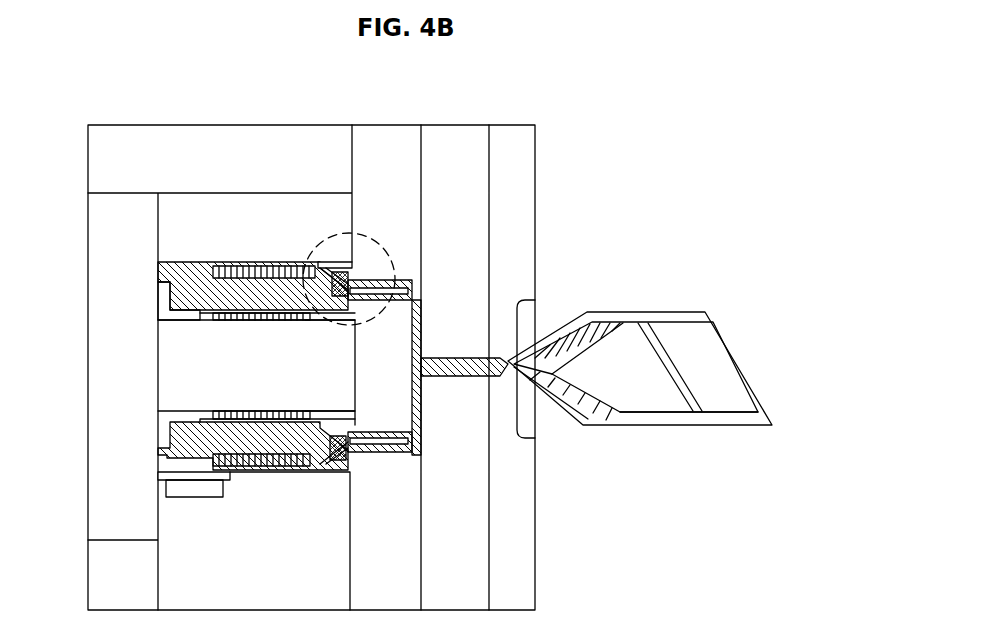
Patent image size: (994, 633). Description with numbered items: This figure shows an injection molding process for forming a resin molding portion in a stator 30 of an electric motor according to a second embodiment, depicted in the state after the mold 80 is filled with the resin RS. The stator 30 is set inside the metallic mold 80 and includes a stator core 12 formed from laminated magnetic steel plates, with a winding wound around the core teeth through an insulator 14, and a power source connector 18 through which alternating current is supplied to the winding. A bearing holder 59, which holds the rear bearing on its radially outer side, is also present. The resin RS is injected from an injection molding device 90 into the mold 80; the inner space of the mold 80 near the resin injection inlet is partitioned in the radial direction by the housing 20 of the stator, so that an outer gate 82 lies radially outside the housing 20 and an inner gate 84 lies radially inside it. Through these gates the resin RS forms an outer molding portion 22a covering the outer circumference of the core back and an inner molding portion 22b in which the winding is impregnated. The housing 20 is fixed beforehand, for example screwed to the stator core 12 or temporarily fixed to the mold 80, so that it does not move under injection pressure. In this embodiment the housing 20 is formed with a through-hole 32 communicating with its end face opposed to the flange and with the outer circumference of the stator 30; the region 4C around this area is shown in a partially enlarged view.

The stator core 12 is at (238, 262).
The insulator 14 is at (208, 318).
The power source connector 18 is at (168, 487).
The housing 20 is at (343, 296).
The outer molding portion 22a is at (278, 262).
The inner molding portion 22b is at (205, 288).
The stator 30 is at (240, 243).
The through-hole 32 is at (345, 272).
The region 4C is at (362, 236).
The bearing holder 59 is at (165, 446).
The mold 80 is at (507, 502).
The outer gate 82 is at (380, 283).
The inner gate 84 is at (370, 303).
The injection molding device 90 is at (668, 311).
The resin RS is at (602, 413).